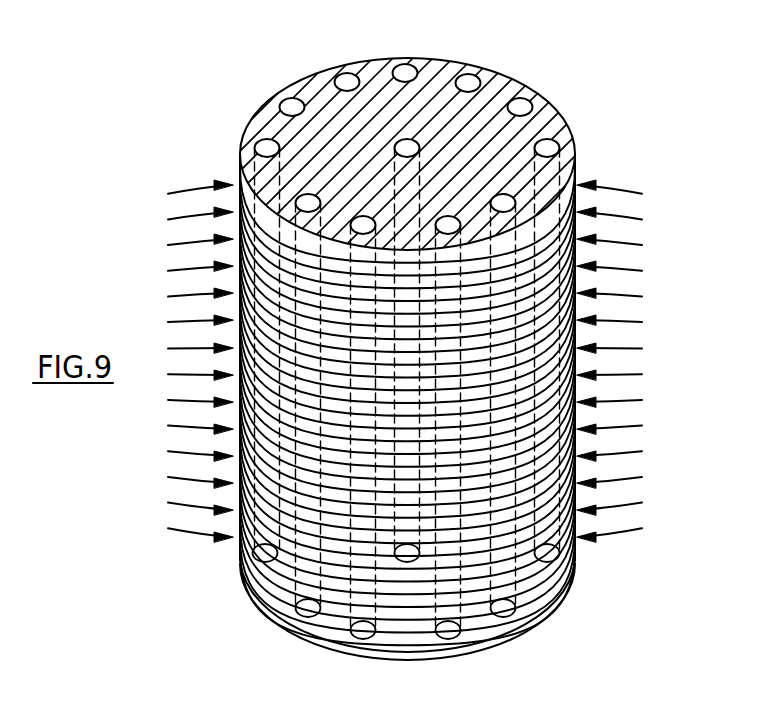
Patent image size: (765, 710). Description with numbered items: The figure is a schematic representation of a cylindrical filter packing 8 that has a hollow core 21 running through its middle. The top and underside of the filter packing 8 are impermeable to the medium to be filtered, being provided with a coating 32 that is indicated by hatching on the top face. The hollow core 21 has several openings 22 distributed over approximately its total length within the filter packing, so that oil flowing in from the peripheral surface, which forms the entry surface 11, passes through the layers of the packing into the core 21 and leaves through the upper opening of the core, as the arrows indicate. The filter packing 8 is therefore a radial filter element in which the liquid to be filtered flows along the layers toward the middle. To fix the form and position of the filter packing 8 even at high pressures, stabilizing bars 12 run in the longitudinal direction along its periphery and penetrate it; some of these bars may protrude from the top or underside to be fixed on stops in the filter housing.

The cylindrical filter packing 8 is at (532, 92).
The entry surface 11 is at (576, 333).
The stabilizing bars 12 is at (465, 80).
The hollow core 21 is at (405, 138).
The openings 22 is at (430, 544).
The coating 32 is at (528, 139).